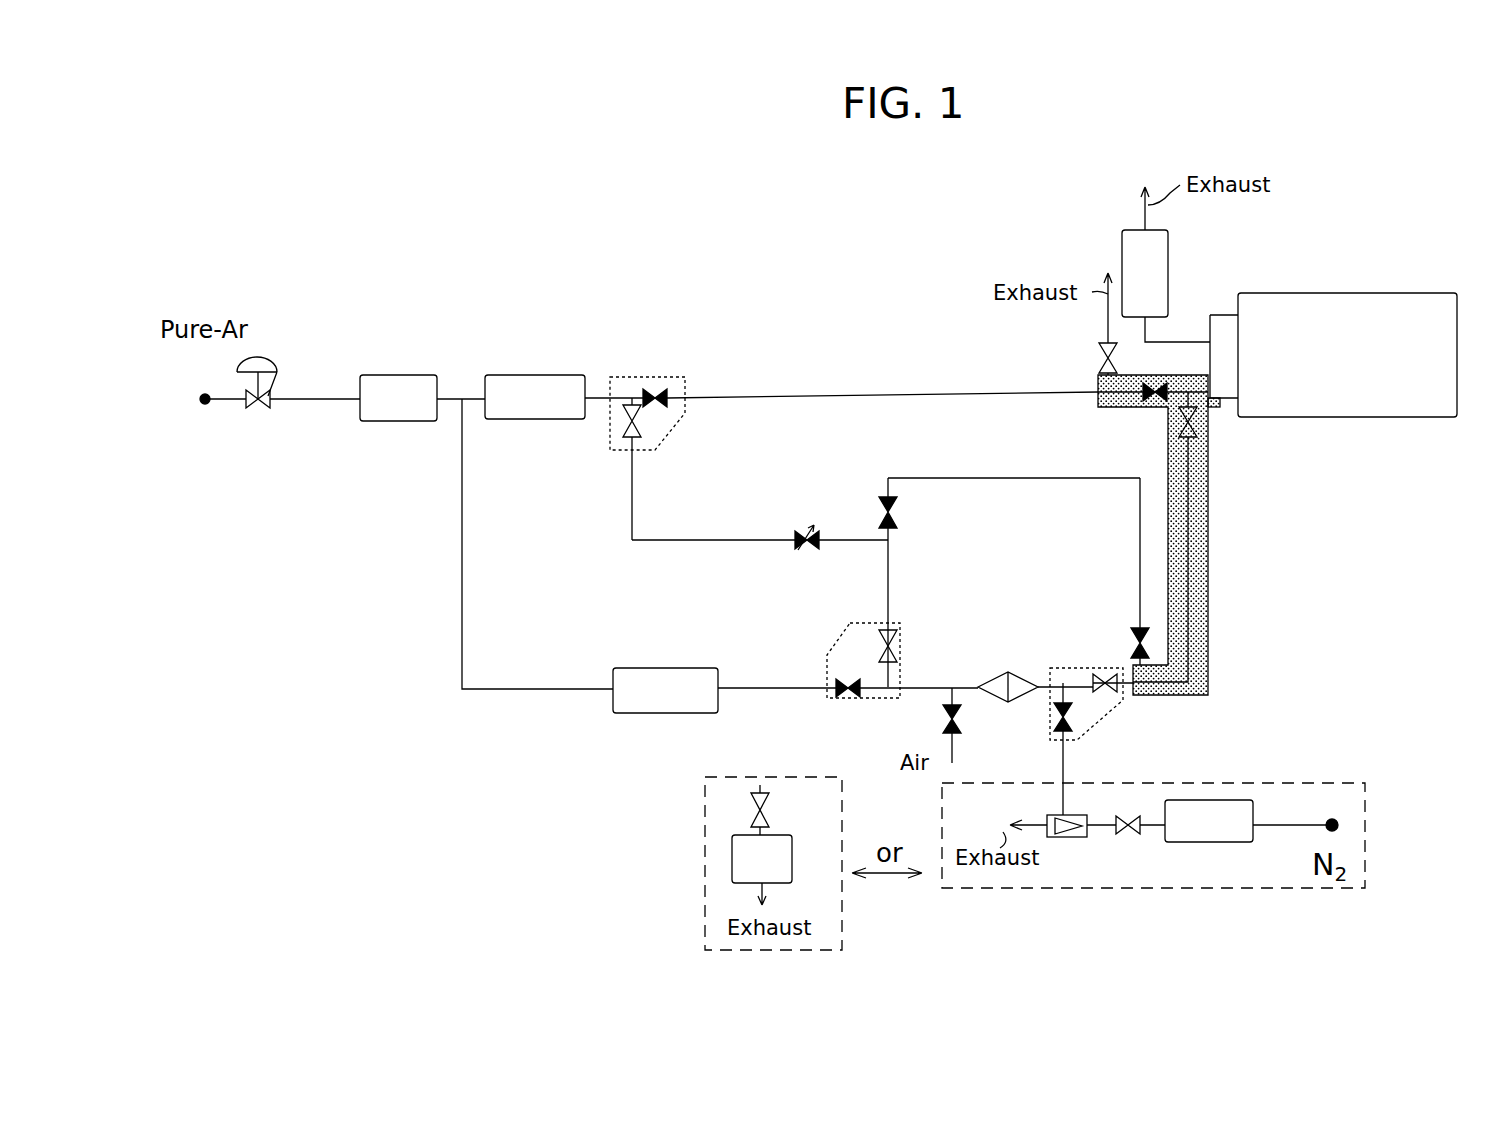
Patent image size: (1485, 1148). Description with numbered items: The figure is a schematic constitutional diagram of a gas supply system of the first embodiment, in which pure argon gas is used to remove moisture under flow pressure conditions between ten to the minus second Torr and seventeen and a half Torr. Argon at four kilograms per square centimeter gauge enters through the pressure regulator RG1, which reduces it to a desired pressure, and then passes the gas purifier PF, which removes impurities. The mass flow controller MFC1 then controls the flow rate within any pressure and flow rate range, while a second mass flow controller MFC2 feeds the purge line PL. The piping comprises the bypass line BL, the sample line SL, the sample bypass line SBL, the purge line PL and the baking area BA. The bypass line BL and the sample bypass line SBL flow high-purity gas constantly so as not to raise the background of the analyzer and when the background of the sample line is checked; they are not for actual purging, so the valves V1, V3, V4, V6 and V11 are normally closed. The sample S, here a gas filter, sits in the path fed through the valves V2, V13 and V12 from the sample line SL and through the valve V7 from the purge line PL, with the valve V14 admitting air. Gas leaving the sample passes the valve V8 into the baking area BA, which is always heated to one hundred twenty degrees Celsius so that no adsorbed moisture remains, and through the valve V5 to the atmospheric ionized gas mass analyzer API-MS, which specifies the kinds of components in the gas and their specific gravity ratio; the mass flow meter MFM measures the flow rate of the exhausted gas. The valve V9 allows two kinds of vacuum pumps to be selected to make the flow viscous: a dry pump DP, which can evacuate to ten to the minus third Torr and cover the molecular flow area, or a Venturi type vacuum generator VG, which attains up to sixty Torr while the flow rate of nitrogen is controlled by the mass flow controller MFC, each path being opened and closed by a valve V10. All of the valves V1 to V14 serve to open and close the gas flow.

The pressure regulator RG1 is at (228, 414).
The gas purifier PF is at (398, 398).
The mass flow controller MFC1 is at (535, 397).
The mass flow controller MFC2 is at (665, 690).
The mass flow controller MFC is at (1209, 821).
The mass flow meter MFM is at (1145, 273).
The atmospheric ionized gas mass analyzer API-MS is at (1347, 355).
The dry pump DP is at (762, 859).
The vacuum generator VG is at (1047, 818).
The bypass line BL is at (818, 397).
The sample line SL is at (697, 540).
The sample bypass line SBL is at (997, 478).
The purge line PL is at (772, 690).
The sample S is at (996, 676).
The baking area BA is at (1208, 527).
The valve V1 is at (655, 386).
The valve V2 is at (623, 412).
The valve V3 is at (1100, 357).
The valve V4 is at (1166, 450).
The valve V5 is at (1196, 418).
The valve V6 is at (896, 520).
The valve V7 is at (845, 678).
The valve V8 is at (1108, 695).
The valve V9 is at (1072, 722).
The valve V10 is at (768, 810).
The valve V11 is at (1132, 640).
The valve V12 is at (897, 652).
The valve V13 is at (818, 532).
The valve V14 is at (960, 720).